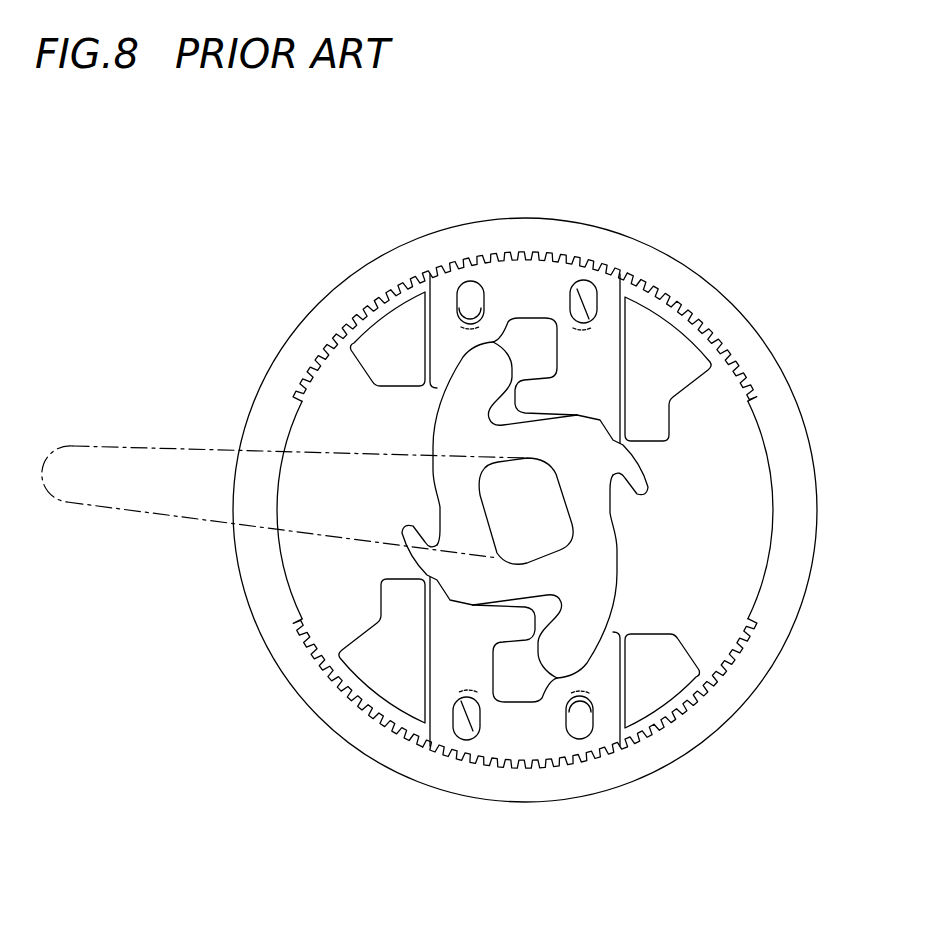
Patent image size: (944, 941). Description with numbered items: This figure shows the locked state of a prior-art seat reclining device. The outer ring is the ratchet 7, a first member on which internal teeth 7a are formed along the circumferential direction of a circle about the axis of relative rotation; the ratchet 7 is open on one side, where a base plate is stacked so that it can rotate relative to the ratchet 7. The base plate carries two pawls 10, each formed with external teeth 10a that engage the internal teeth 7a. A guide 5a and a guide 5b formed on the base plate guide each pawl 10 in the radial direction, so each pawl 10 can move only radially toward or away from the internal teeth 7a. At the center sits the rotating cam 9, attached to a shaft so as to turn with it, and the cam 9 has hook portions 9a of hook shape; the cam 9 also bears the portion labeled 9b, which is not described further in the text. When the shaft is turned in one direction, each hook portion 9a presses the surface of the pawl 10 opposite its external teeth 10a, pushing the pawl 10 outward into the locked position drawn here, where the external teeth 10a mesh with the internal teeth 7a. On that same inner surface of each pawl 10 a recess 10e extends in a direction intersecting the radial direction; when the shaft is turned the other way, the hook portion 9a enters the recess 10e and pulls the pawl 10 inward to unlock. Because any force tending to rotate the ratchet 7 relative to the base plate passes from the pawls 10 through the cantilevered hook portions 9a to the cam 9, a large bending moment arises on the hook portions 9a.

The ratchet 7 is at (790, 488).
The internal teeth 7a is at (730, 673).
The guide 5a is at (672, 352).
The guide 5b is at (382, 335).
The rotating cam 9 is at (603, 533).
The hook portions 9a is at (470, 385).
The cam projection 9b is at (643, 485).
The pawl 10 is at (600, 373).
The external teeth 10a is at (580, 768).
The recess 10e is at (513, 675).